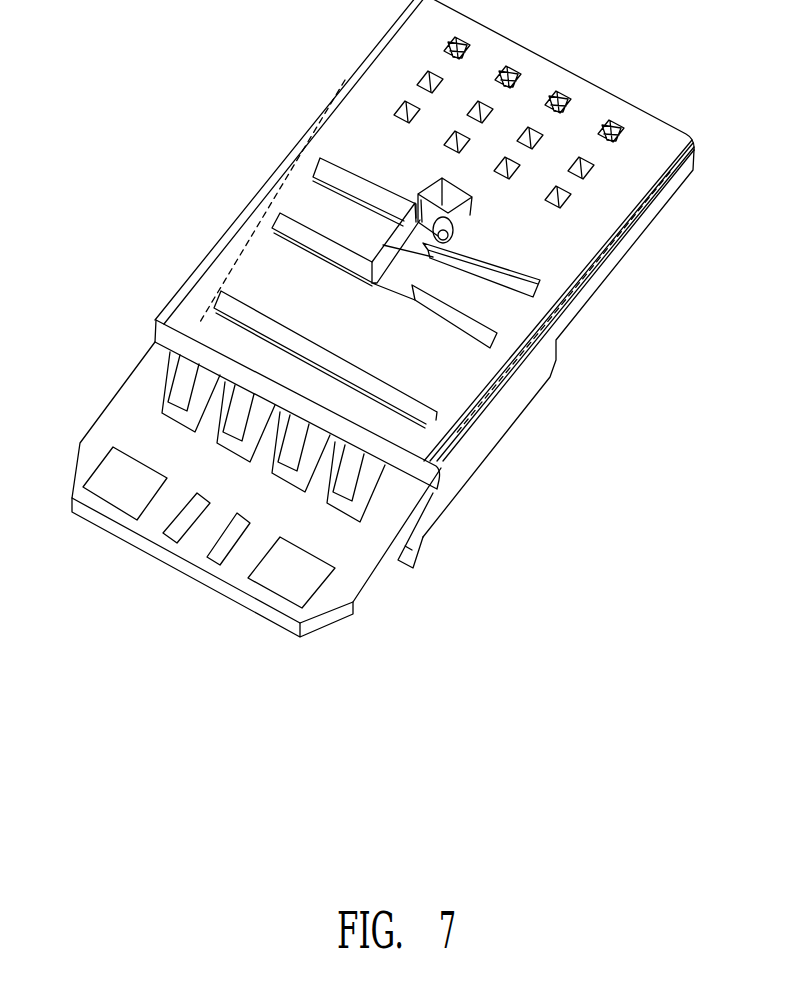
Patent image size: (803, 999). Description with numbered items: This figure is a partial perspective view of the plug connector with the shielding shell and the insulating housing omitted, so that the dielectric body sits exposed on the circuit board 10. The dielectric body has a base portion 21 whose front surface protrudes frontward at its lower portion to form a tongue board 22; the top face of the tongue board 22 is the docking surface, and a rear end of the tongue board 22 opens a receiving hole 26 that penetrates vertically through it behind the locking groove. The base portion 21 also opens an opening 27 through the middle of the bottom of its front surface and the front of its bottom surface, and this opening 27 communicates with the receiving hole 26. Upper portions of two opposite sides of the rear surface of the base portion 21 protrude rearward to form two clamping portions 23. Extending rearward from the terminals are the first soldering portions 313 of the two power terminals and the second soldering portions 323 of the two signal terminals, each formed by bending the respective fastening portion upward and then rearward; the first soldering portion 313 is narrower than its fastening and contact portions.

The circuit board 10 is at (155, 523).
The base portion 21 is at (520, 383).
The tongue board 22 is at (620, 232).
The clamping portions 23 is at (418, 540).
The receiving hole 26 is at (436, 215).
The opening 27 is at (407, 272).
The first soldering portion 313 is at (193, 380).
The second soldering portion 323 is at (237, 427).